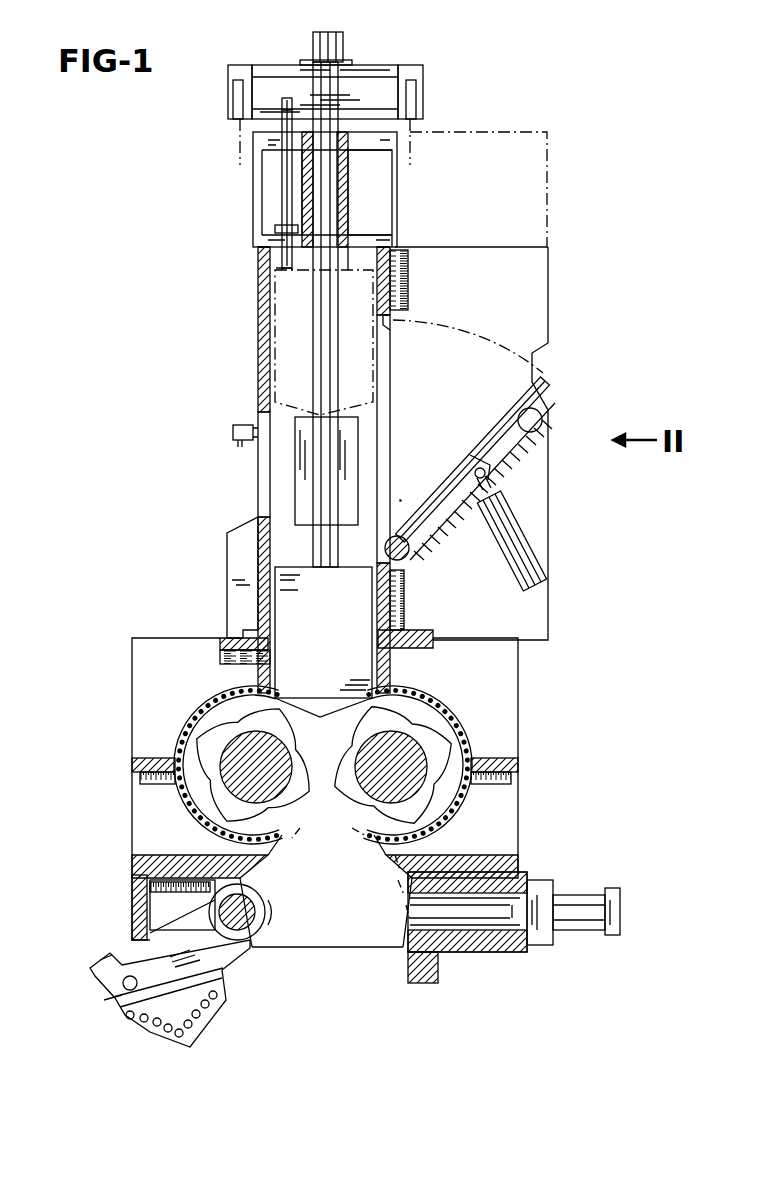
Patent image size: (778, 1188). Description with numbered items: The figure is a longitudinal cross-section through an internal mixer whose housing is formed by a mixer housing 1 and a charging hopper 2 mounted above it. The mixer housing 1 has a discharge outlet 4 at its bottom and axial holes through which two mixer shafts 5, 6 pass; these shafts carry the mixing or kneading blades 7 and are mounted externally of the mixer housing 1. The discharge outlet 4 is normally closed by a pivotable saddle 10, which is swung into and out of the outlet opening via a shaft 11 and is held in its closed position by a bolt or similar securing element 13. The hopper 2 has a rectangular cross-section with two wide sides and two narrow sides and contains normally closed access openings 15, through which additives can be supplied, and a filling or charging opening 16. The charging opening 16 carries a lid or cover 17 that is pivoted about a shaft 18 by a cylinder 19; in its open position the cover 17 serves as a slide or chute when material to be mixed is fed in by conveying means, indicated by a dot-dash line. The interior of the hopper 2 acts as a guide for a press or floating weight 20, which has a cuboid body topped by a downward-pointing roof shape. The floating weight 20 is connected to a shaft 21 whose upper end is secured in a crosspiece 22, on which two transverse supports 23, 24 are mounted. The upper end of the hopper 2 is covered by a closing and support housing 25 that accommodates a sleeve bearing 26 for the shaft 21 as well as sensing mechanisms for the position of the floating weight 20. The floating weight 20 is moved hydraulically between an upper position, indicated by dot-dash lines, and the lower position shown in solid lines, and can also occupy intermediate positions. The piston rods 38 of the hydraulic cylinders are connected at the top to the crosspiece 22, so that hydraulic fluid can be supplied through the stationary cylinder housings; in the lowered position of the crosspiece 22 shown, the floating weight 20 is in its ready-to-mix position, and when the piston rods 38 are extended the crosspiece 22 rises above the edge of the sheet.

The mixer housing 1 is at (518, 762).
The charging hopper 2 is at (258, 540).
The discharge outlet 4 is at (328, 882).
The mixer shaft 5 is at (240, 745).
The mixer shaft 6 is at (410, 745).
The mixing or kneading blades 7 is at (205, 758).
The pivotable saddle 10 is at (205, 1025).
The shaft 11 is at (250, 930).
The bolt or securing element 13 is at (472, 945).
The access openings 15 is at (268, 490).
The filling or charging opening 16 is at (390, 445).
The lid or cover 17 is at (500, 430).
The shaft 18 is at (405, 558).
The cylinder 19 is at (520, 535).
The floating weight 20 is at (290, 597).
The shaft 21 is at (335, 262).
The crosspiece 22 is at (365, 72).
The transverse support 23 is at (238, 68).
The transverse support 24 is at (415, 68).
The closing and support housing 25 is at (262, 186).
The sleeve bearing 26 is at (350, 200).
The piston rods 38 is at (238, 150).